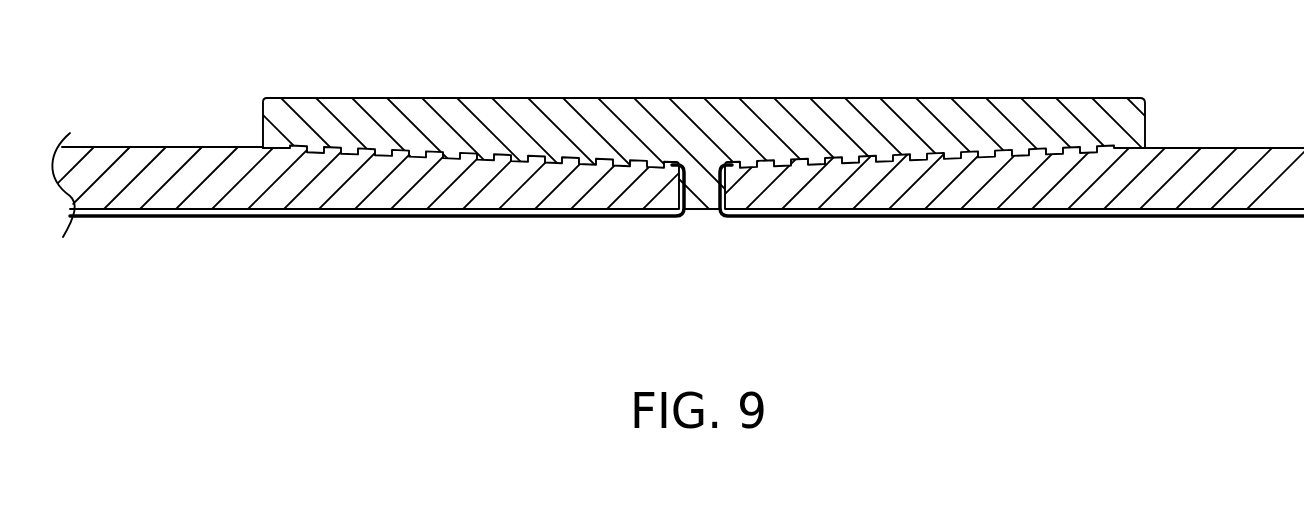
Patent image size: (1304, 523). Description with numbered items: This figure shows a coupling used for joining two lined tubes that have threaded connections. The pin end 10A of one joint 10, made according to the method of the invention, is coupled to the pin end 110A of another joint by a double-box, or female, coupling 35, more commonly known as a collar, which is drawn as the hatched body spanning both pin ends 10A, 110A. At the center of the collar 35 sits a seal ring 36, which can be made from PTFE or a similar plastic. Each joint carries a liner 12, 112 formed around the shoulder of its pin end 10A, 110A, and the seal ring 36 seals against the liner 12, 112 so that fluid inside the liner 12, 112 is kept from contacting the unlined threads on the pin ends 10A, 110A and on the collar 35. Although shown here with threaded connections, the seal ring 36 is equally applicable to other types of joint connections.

The joint 10 is at (182, 147).
The pin end 10A is at (517, 152).
The pin end 110A is at (1022, 152).
The liner 12 is at (408, 218).
The liner 112 is at (922, 218).
The double-box coupling 35 is at (540, 97).
The seal ring 36 is at (705, 209).